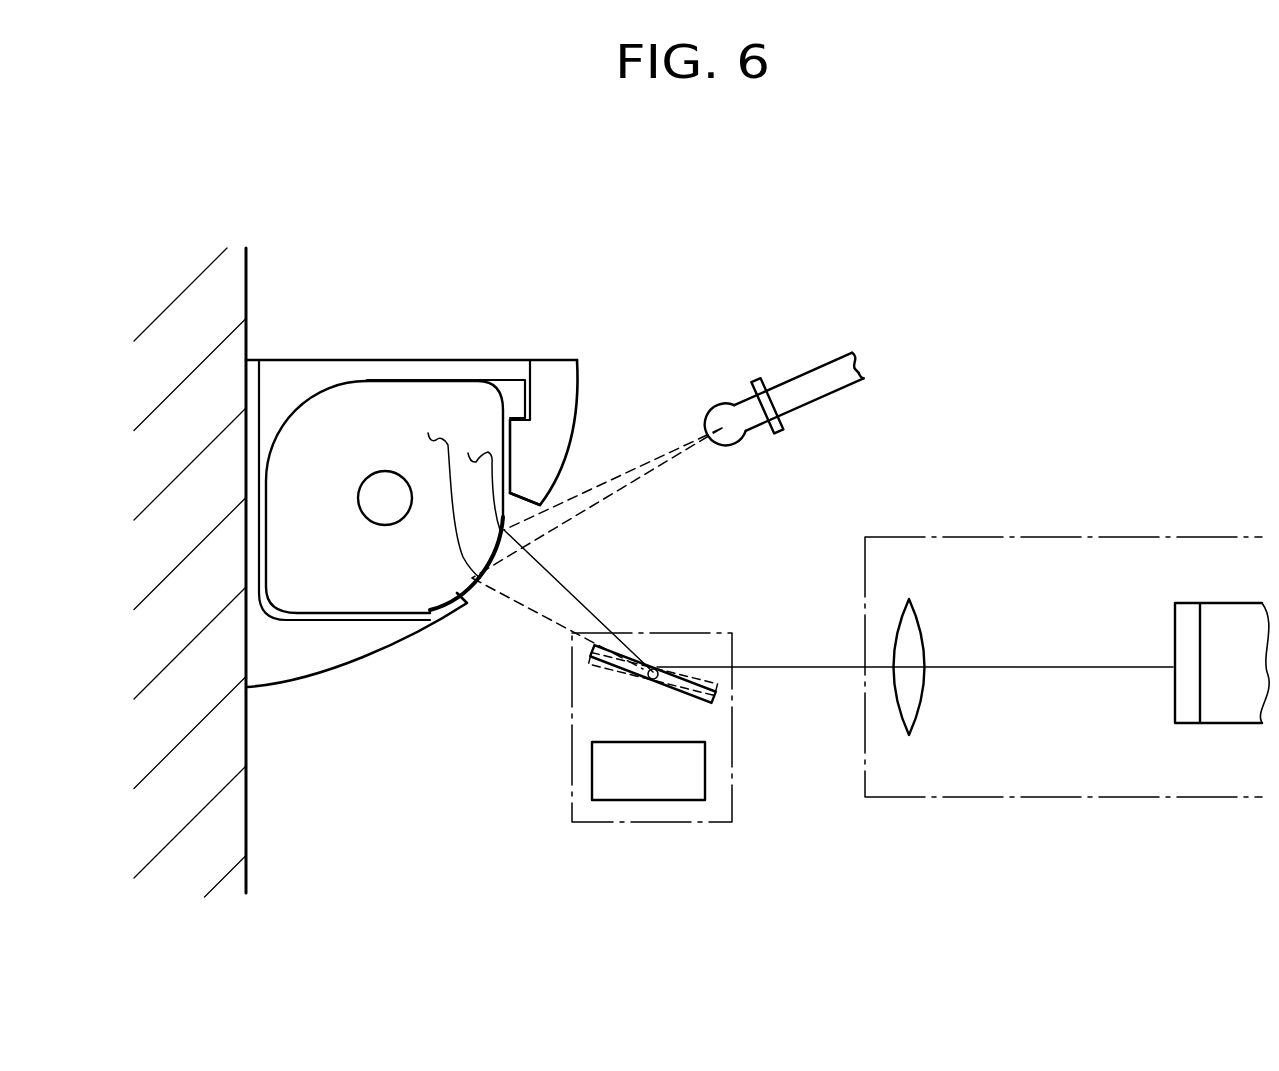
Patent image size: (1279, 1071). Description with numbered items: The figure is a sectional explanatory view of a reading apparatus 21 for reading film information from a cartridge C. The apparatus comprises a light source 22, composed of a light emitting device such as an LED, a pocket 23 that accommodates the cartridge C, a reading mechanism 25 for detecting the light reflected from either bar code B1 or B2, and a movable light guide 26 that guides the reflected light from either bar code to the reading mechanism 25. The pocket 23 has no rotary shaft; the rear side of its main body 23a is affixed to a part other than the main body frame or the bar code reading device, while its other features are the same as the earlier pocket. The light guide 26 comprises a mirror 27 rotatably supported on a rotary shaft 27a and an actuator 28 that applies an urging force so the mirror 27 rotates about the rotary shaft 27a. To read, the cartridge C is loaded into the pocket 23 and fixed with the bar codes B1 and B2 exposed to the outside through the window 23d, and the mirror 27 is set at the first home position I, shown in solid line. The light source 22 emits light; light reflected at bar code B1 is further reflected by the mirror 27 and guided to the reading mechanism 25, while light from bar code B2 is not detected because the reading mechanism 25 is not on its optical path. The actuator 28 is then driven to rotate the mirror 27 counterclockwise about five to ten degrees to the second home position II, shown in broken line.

The cartridge C is at (367, 402).
The bar code B1 is at (468, 453).
The bar code B2 is at (428, 433).
The pocket 23 is at (806, 238).
The main body 23a is at (567, 377).
The window 23d is at (520, 497).
The reading apparatus 21 is at (1038, 373).
The light source 22 is at (750, 418).
The reading mechanism 25 is at (1090, 521).
The movable light guide 26 is at (665, 833).
The mirror 27 is at (600, 668).
The rotary shaft 27a is at (648, 677).
The actuator 28 is at (610, 783).
The first home position I is at (693, 700).
The second home position II is at (697, 677).